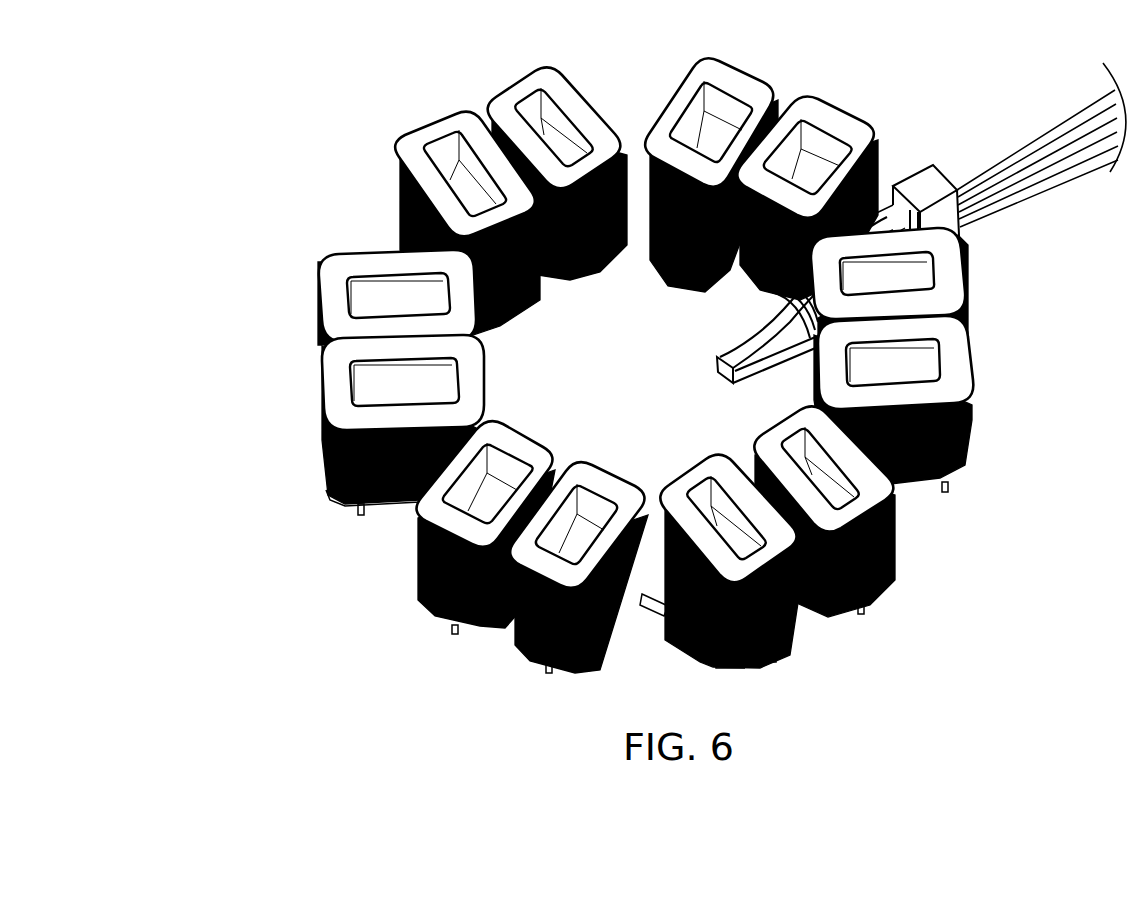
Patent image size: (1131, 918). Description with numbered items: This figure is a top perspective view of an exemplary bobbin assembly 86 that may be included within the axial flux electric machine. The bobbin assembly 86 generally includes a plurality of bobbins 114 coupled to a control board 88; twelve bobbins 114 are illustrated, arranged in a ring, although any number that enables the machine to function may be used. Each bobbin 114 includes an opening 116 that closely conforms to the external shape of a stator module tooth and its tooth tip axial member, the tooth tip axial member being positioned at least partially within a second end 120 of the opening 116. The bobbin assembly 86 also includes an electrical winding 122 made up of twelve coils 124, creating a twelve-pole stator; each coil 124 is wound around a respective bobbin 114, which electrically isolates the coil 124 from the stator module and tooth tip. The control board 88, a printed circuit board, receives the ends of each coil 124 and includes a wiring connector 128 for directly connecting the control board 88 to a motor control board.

The bobbin assembly 86 is at (263, 127).
The control board 88 is at (652, 382).
The bobbin 114 is at (855, 134).
The opening 116 is at (725, 114).
The second end 120 is at (464, 146).
The electrical winding 122 is at (306, 447).
The coil 124 is at (323, 480).
The wiring connector 128 is at (928, 188).